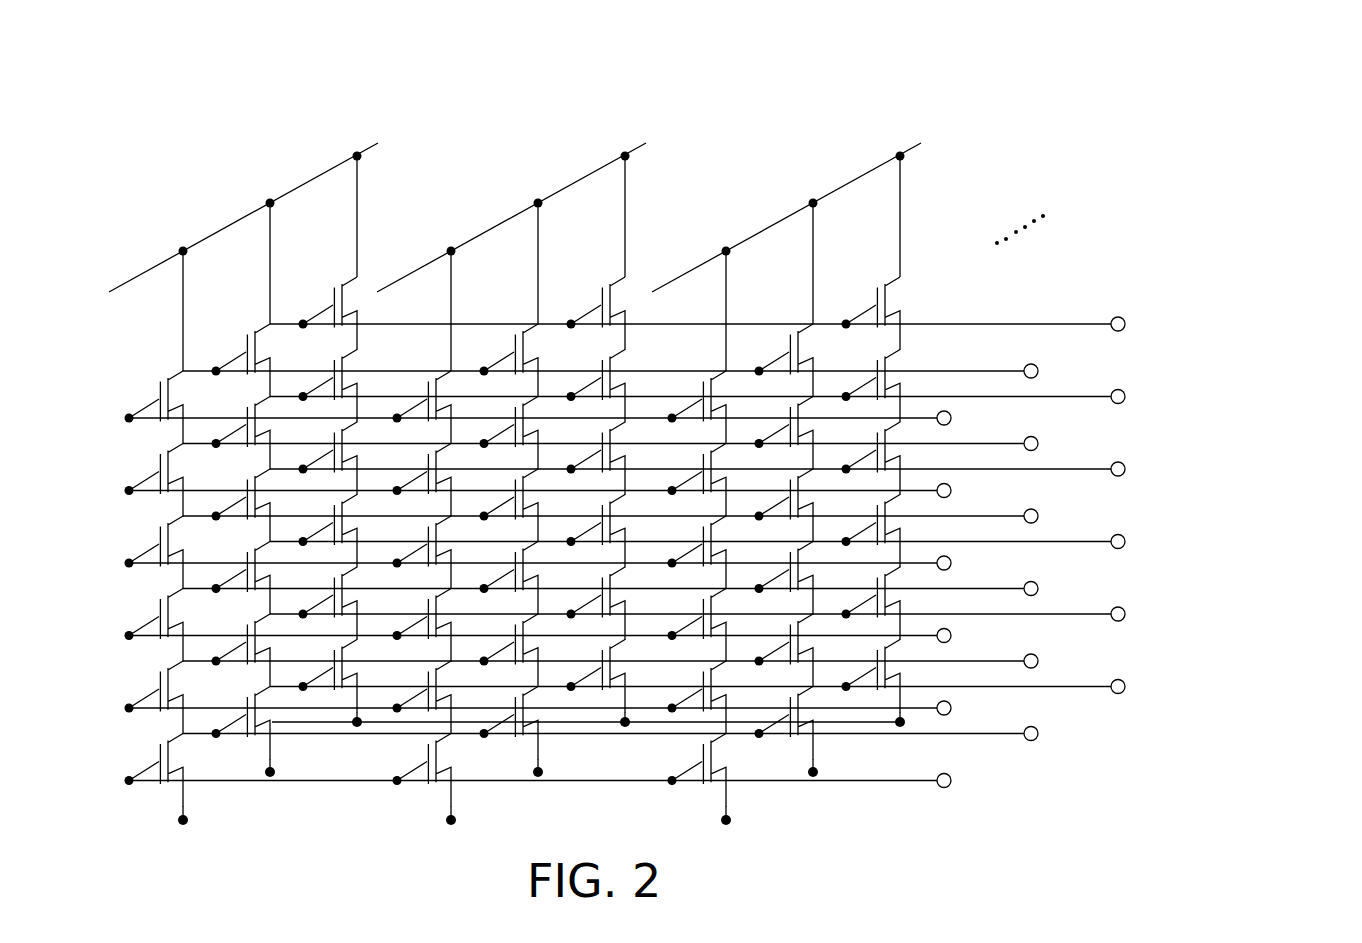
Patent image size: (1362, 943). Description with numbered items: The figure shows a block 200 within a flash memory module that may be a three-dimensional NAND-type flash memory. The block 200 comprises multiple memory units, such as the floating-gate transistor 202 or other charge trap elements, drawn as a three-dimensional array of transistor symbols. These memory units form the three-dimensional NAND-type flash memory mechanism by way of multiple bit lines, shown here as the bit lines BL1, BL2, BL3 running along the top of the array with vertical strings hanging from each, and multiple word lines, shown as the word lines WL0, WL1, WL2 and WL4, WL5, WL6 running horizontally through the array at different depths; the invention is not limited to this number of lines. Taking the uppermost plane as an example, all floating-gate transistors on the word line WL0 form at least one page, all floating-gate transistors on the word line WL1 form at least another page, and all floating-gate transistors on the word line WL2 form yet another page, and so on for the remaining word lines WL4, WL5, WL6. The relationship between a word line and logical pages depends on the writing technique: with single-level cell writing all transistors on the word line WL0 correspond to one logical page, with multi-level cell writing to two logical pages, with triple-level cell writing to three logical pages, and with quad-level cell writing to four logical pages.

The block 200 is at (1165, 135).
The floating-gate transistor 202 is at (155, 394).
The bit line BL1 is at (378, 143).
The bit line BL2 is at (646, 143).
The bit line BL3 is at (921, 143).
The word line WL0 is at (951, 418).
The word line WL1 is at (1038, 370).
The word line WL2 is at (1125, 324).
The word line WL4 is at (951, 490).
The word line WL5 is at (1038, 443).
The word line WL6 is at (1125, 397).